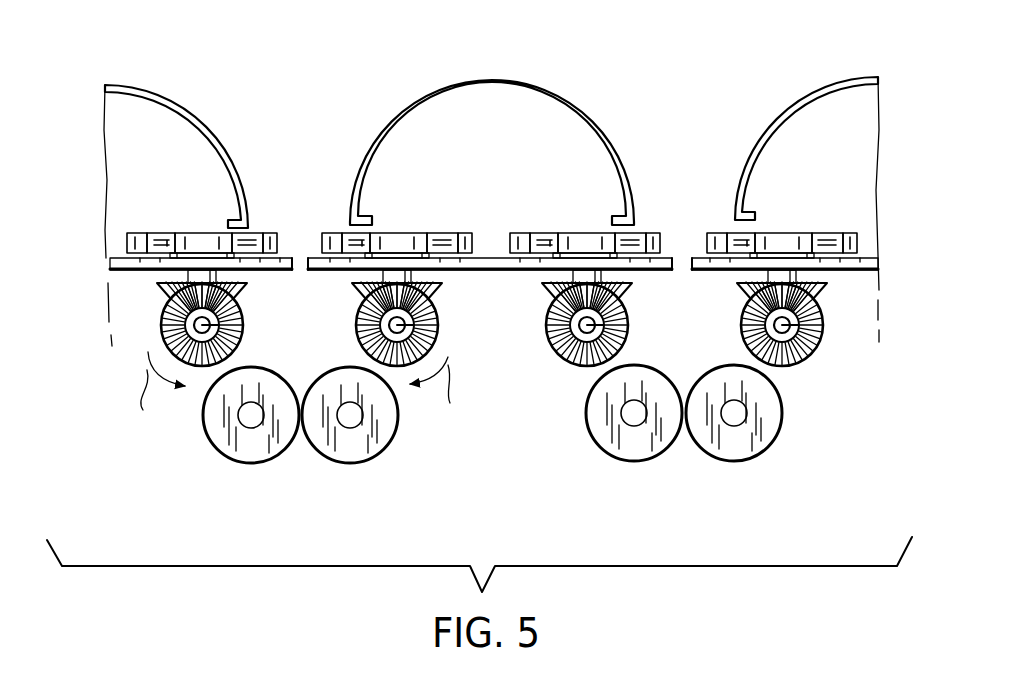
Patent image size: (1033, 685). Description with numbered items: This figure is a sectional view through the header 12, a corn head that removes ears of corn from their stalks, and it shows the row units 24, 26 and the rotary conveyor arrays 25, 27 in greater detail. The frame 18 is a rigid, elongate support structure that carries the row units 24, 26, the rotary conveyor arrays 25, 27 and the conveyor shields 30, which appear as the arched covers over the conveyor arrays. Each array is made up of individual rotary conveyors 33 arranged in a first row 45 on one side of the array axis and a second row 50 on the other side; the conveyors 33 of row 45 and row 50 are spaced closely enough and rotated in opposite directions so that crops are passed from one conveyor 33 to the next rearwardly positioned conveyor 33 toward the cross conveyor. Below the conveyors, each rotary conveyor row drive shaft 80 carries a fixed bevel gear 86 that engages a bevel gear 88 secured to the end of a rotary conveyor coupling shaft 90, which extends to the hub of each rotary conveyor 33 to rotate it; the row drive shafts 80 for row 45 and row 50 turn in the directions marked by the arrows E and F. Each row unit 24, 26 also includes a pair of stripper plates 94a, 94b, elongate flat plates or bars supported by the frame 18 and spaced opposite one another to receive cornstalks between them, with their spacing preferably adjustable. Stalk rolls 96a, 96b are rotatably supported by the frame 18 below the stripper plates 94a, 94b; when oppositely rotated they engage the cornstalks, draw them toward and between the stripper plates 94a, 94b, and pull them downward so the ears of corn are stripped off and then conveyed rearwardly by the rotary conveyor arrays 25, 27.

The header 12 is at (897, 90).
The frame 18 is at (128, 244).
The row unit 24 is at (345, 470).
The rotary conveyor array 25 is at (198, 218).
The row unit 26 is at (690, 460).
The rotary conveyor array 27 is at (775, 202).
The conveyor shield 30 is at (110, 84).
The rotary conveyor 33 is at (270, 231).
The first row 45 is at (153, 222).
The second row 50 is at (437, 222).
The rotary conveyor row drive shaft 80 is at (380, 326).
The rotary conveyor bevel gear 86 is at (163, 330).
The rotary conveyor bevel gear 88 is at (352, 285).
The rotary conveyor coupling shaft 90 is at (192, 282).
The stripper plate 94a is at (292, 257).
The stripper plate 94b is at (308, 257).
The stalk roll 96a is at (215, 458).
The stalk roll 96b is at (367, 462).